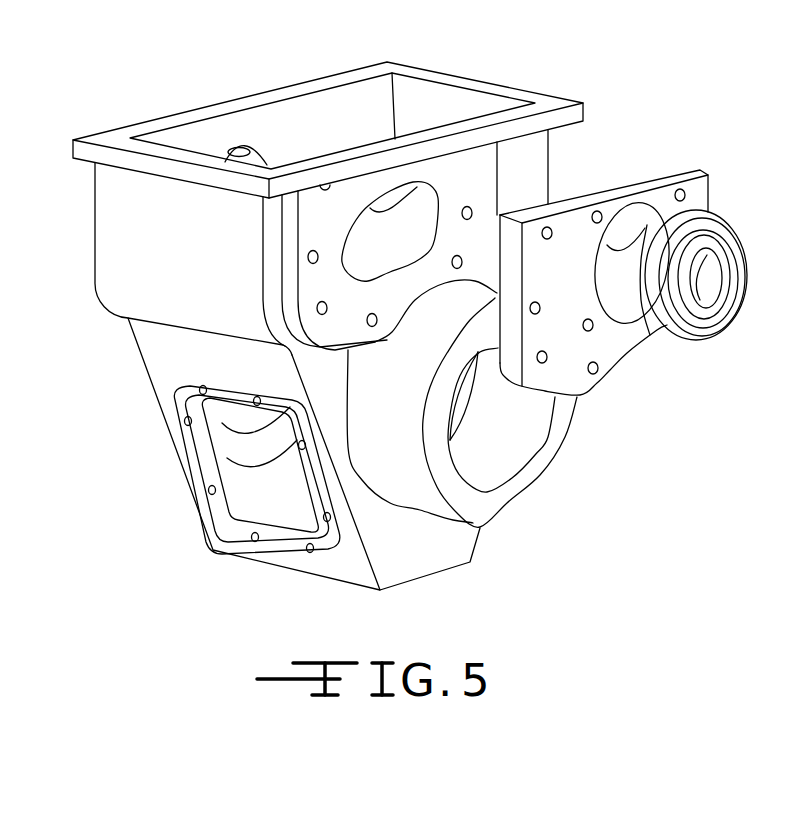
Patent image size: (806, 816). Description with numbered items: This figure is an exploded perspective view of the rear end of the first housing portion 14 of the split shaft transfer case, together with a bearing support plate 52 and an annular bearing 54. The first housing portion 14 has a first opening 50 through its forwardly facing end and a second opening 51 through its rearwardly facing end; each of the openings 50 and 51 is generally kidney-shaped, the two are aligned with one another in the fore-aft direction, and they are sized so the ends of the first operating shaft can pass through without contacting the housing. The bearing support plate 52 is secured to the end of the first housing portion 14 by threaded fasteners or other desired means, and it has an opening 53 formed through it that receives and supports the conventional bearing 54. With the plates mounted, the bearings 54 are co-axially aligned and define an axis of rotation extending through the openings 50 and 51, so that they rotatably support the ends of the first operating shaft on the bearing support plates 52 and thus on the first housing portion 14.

The first housing portion 14 is at (138, 270).
The first opening 50 is at (370, 208).
The second opening 51 is at (258, 147).
The bearing support plate 52 is at (575, 237).
The opening 53 is at (613, 242).
The bearing 54 is at (693, 327).